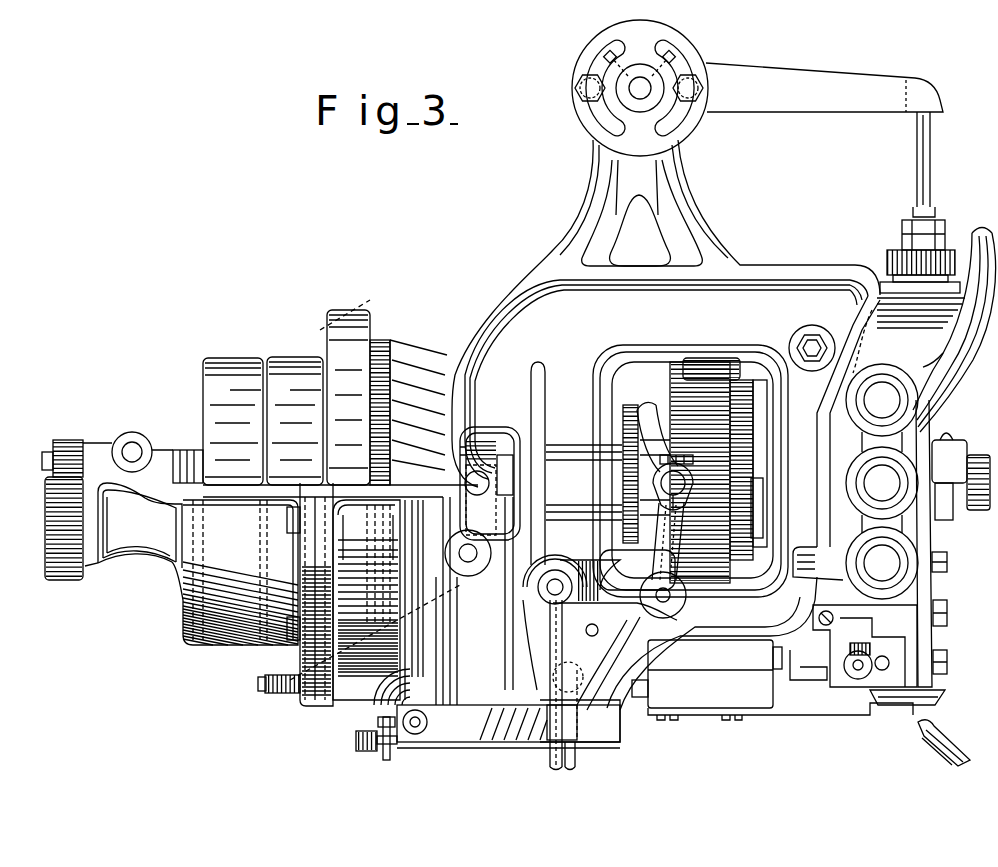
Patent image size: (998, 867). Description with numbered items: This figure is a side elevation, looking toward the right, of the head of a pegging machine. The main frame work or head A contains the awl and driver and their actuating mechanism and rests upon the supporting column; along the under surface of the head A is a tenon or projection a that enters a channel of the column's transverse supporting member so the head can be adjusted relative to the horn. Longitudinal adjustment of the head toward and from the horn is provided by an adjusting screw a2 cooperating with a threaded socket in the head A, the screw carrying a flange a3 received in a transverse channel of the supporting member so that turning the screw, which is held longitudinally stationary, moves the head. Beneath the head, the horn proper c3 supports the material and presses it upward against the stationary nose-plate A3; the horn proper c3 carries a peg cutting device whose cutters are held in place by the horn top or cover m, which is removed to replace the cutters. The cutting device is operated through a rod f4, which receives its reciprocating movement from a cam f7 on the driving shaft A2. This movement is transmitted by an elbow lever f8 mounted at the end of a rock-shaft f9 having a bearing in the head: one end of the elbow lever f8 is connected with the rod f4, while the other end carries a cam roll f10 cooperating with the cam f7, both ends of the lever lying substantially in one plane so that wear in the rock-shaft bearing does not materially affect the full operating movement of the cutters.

The main frame work or head A is at (599, 381).
The driving shaft A2 is at (515, 470).
The stationary nose-plate A3 is at (945, 695).
The tenon or projection a is at (490, 750).
The adjusting screw a2 is at (356, 740).
The flange a3 is at (383, 752).
The horn proper c3 is at (935, 750).
The rod f4 is at (552, 765).
The cam f7 is at (641, 425).
The elbow lever f8 is at (653, 541).
The rock-shaft f9 is at (663, 600).
The cam roll f10 is at (690, 470).
The horn top or cover m is at (930, 708).